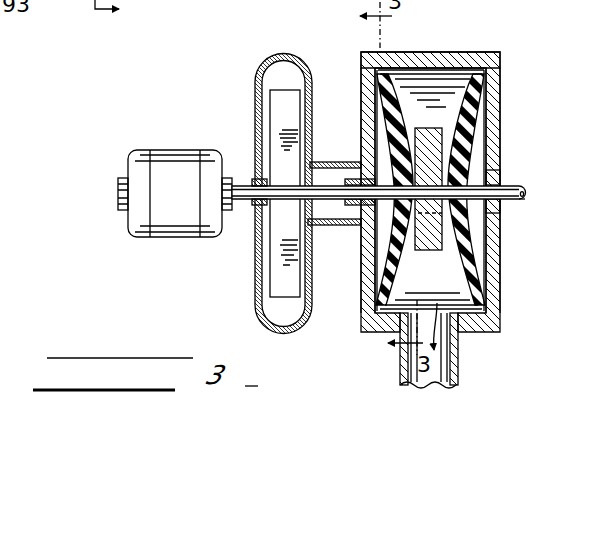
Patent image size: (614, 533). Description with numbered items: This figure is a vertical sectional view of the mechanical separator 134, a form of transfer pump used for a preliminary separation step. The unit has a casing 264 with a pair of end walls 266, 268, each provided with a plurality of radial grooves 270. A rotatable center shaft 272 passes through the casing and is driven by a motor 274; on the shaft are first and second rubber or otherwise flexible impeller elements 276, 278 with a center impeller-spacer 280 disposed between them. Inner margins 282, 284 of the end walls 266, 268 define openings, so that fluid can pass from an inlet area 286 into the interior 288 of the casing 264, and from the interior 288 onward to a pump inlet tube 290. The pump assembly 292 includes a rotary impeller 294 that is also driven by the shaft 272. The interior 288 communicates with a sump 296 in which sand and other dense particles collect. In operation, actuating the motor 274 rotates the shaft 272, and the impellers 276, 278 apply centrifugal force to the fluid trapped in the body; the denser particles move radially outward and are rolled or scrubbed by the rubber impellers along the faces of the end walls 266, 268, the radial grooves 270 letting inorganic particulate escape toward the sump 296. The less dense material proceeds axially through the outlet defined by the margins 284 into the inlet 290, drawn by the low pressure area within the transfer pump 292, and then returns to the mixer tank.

The mechanical separator 134 is at (376, 48).
The casing 264 is at (462, 52).
The end wall 266 is at (497, 116).
The end wall 268 is at (366, 137).
The radial grooves 270 is at (497, 157).
The center shaft 272 is at (513, 187).
The motor 274 is at (161, 166).
The first flexible impeller element 276 is at (485, 90).
The second flexible impeller element 278 is at (383, 96).
The center impeller-spacer 280 is at (428, 243).
The inner margin 282 is at (495, 218).
The inner margin 284 is at (366, 258).
The inlet area 286 is at (524, 207).
The interior 288 is at (450, 287).
The pump inlet tube 290 is at (334, 214).
The pump assembly 292 is at (248, 278).
The rotary impeller 294 is at (287, 285).
The sump 296 is at (442, 372).